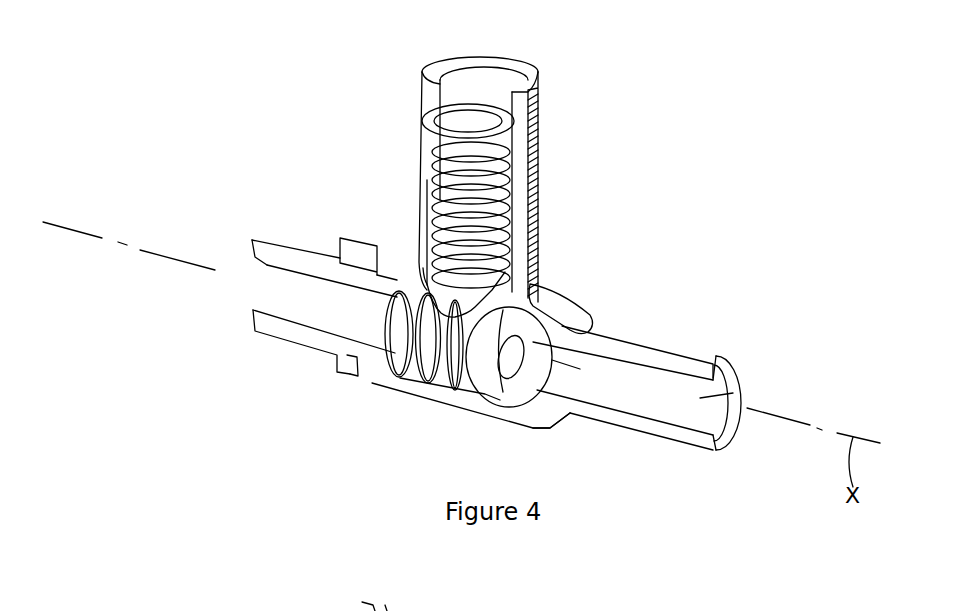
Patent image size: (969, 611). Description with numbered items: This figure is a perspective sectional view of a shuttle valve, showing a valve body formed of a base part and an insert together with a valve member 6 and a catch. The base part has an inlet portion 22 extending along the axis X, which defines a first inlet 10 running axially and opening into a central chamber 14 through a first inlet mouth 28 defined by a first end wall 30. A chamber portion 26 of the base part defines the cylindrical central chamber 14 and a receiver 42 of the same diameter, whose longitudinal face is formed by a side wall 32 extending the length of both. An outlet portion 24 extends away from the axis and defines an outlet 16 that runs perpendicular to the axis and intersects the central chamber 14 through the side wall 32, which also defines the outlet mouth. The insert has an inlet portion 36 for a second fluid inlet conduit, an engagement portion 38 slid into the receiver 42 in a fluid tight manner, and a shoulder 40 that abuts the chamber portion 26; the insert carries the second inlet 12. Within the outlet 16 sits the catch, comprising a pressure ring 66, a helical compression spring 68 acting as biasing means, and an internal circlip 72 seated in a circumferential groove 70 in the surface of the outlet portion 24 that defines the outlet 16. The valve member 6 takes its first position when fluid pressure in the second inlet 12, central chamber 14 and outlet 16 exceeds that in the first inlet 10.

The valve member 6 is at (388, 378).
The first inlet 10 is at (737, 397).
The second inlet 12 is at (270, 268).
The central chamber 14 is at (505, 385).
The outlet 16 is at (478, 82).
The inlet portion 22 is at (680, 350).
The outlet portion 24 is at (540, 141).
The chamber portion 26 is at (525, 422).
The first inlet mouth 28 is at (592, 330).
The first end wall 30 is at (532, 303).
The side wall 32 is at (522, 305).
The inlet portion 36 is at (281, 244).
The engagement portion 38 is at (367, 380).
The shoulder 40 is at (347, 242).
The receiver 42 is at (377, 244).
The pressure ring 66 is at (533, 280).
The helical compression spring 68 is at (512, 178).
The groove 70 is at (520, 130).
The circlip 72 is at (420, 124).